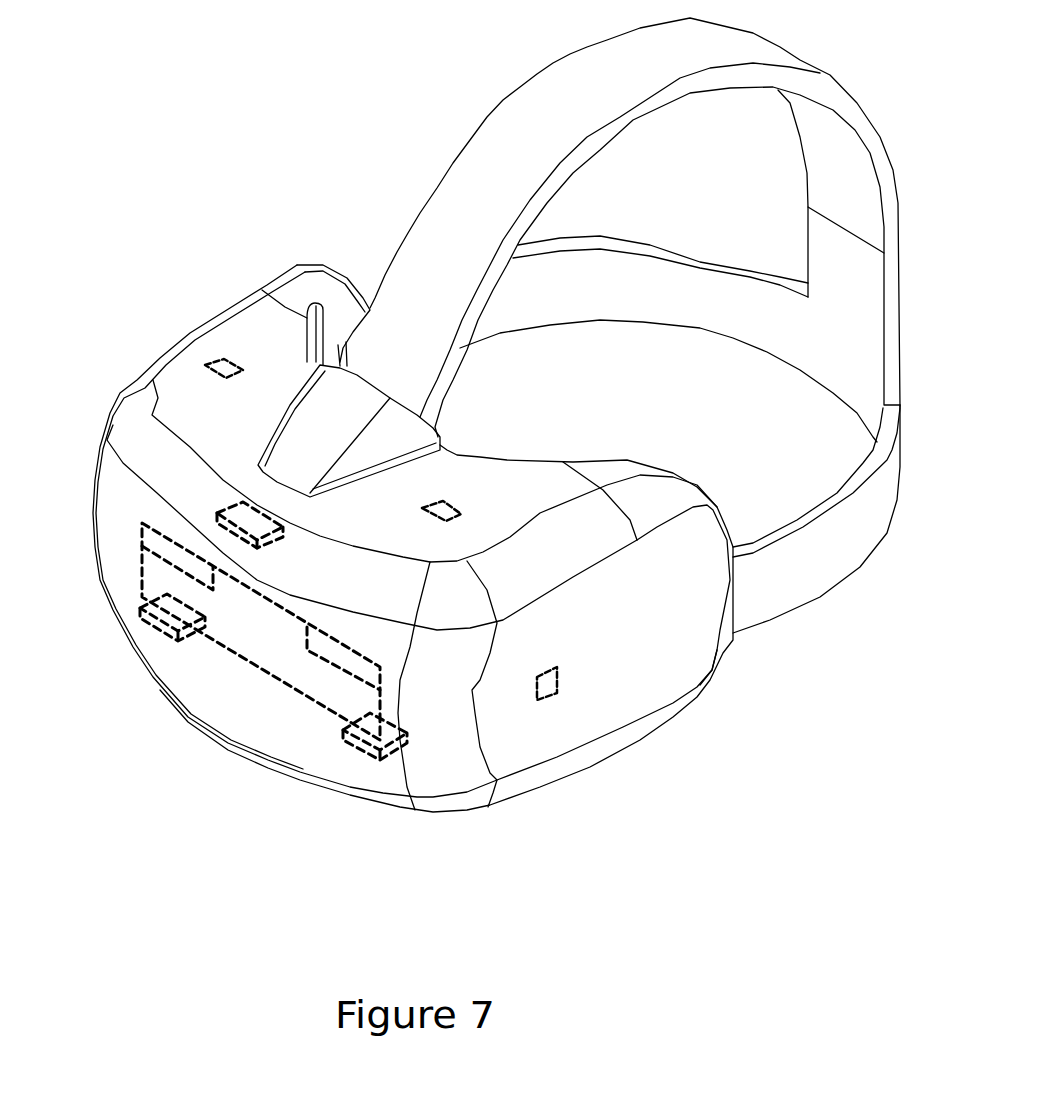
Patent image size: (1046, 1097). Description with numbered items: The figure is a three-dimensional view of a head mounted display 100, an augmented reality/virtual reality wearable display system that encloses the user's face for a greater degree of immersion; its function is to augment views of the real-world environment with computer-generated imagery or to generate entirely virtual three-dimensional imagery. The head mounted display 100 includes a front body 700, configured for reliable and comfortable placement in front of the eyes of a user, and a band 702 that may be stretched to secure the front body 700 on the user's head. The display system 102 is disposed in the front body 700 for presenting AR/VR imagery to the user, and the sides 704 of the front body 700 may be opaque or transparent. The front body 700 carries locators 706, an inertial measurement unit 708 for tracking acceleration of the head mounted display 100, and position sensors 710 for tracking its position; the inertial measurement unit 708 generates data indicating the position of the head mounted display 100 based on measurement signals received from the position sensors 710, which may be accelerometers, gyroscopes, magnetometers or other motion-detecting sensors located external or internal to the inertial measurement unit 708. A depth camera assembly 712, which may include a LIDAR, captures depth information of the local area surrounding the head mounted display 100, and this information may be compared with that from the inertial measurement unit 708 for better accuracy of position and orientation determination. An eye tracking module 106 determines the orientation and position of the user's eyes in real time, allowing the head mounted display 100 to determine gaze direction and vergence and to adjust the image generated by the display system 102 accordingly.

The head mounted display 100 is at (287, 188).
The display system 102 is at (277, 640).
The eye tracking module 106 is at (157, 540).
The front body 700 is at (114, 400).
The band 702 is at (683, 247).
The sides 704 is at (640, 647).
The locators 706 is at (223, 360).
The inertial measurement unit 708 is at (155, 617).
The position sensors 710 is at (363, 747).
The depth camera assembly 712 is at (248, 518).